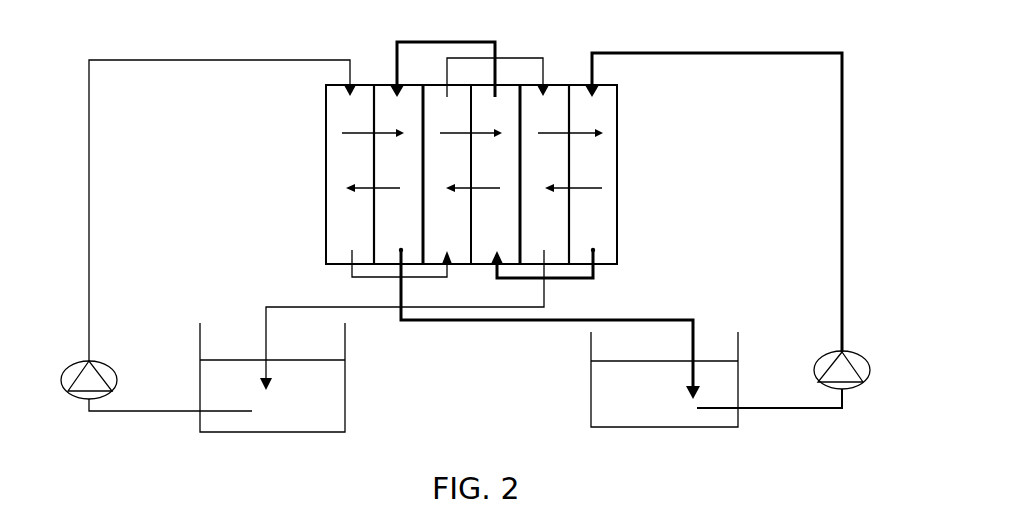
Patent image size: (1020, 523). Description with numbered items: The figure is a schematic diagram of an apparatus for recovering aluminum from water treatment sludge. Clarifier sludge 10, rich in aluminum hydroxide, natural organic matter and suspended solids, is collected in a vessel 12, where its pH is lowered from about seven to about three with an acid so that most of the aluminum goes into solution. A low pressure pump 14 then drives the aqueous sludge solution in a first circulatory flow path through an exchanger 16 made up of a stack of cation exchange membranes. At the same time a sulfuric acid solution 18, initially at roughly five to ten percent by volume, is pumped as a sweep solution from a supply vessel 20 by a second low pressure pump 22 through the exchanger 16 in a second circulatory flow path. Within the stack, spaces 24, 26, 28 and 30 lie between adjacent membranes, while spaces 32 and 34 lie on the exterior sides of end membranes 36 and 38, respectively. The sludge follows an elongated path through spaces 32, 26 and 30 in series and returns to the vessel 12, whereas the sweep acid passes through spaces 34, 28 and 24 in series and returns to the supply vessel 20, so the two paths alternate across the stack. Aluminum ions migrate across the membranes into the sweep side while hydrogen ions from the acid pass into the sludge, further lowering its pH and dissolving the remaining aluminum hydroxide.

The clarifier sludge 10 is at (327, 377).
The vessel 12 is at (345, 405).
The low pressure pump 14 is at (108, 363).
The exchanger 16 is at (660, 150).
The sulfuric acid solution 18 is at (608, 390).
The supply vessel 20 is at (738, 348).
The low pressure pump 22 is at (870, 358).
The space 24 is at (388, 97).
The space 26 is at (437, 97).
The space 28 is at (498, 97).
The space 30 is at (553, 97).
The space 32 is at (342, 229).
The space 34 is at (595, 228).
The end membrane 36 is at (373, 210).
The end membrane 38 is at (570, 222).